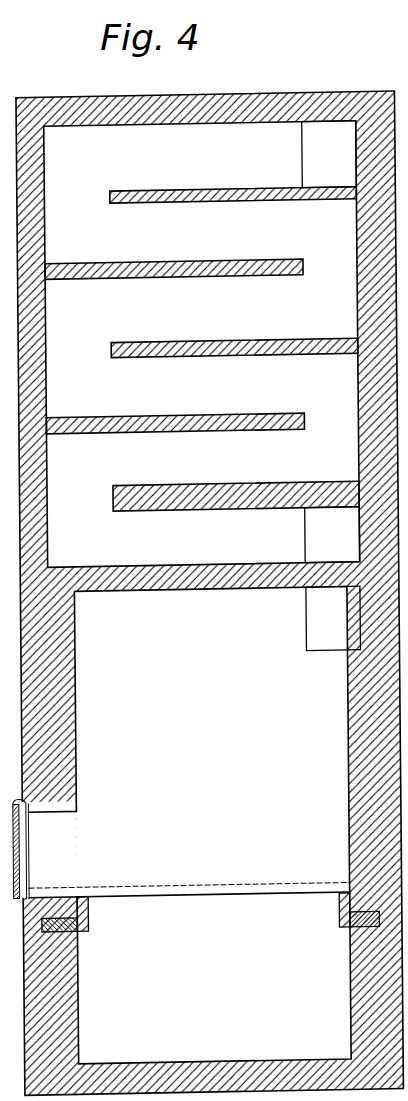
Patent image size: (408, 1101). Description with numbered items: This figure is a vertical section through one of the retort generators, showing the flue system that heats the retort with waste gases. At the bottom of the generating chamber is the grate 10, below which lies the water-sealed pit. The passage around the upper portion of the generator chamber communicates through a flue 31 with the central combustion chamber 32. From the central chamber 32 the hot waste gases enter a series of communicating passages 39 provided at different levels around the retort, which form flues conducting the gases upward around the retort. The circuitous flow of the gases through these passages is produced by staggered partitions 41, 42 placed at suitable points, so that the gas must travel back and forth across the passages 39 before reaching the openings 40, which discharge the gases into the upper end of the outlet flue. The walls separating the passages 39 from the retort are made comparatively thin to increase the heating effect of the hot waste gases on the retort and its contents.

The grate 10 is at (212, 895).
The flue 31 is at (333, 618).
The central combustion chamber 32 is at (332, 535).
The communicating passages 39 is at (202, 344).
The openings 40 is at (329, 154).
The staggered partitions 41 is at (227, 277).
The staggered partitions 42 is at (228, 202).